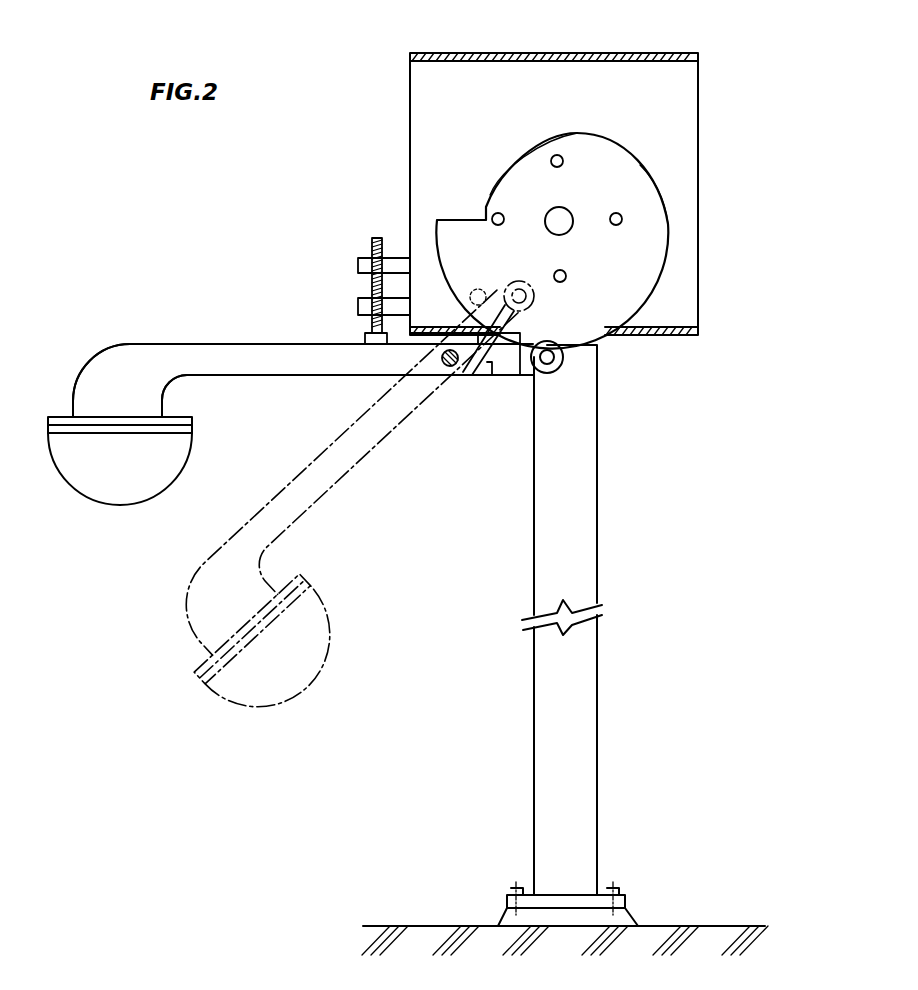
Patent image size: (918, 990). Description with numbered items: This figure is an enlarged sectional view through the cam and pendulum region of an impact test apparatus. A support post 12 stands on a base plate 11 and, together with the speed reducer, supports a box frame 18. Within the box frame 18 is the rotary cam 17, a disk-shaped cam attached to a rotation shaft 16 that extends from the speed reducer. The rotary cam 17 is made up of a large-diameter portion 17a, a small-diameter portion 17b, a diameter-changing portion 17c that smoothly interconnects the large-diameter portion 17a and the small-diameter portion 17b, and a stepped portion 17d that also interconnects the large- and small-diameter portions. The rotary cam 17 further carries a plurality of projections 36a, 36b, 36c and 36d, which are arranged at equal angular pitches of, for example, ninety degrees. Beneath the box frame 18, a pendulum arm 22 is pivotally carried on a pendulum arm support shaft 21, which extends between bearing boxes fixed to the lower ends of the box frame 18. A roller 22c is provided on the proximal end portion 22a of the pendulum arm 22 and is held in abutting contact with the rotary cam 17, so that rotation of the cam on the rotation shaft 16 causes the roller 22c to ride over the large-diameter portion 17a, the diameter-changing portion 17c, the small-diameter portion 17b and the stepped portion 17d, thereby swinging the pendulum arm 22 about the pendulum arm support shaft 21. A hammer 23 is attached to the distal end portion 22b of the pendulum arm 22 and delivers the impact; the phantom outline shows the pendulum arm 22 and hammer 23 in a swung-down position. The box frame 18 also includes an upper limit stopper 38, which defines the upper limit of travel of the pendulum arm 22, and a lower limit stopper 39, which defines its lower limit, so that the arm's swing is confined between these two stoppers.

The base plate 11 is at (604, 890).
The support post 12 is at (582, 717).
The rotation shaft 16 is at (564, 212).
The rotary cam 17 is at (618, 300).
The large-diameter portion 17a is at (463, 372).
The small-diameter portion 17b is at (512, 152).
The diameter-changing portion 17c is at (660, 187).
The stepped portion 17d is at (453, 218).
The box frame 18 is at (698, 92).
The pendulum arm support shaft 21 is at (445, 370).
The pendulum arm 22 is at (168, 360).
The proximal end portion 22a is at (515, 368).
The distal end portion 22b is at (87, 388).
The roller 22c is at (565, 372).
The hammer 23 is at (120, 487).
The projection 36a is at (497, 213).
The projection 36b is at (557, 155).
The projection 36c is at (622, 219).
The projection 36d is at (566, 276).
The upper limit stopper 38 is at (355, 325).
The lower limit stopper 39 is at (475, 290).